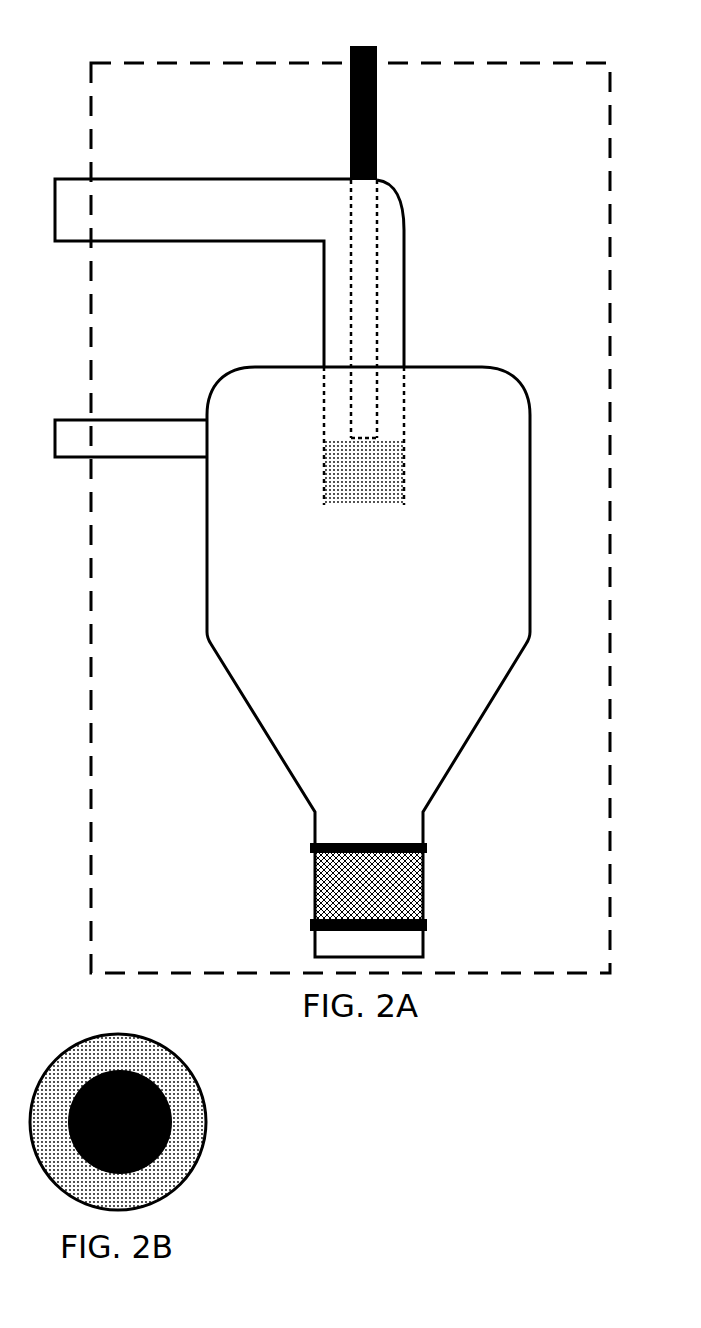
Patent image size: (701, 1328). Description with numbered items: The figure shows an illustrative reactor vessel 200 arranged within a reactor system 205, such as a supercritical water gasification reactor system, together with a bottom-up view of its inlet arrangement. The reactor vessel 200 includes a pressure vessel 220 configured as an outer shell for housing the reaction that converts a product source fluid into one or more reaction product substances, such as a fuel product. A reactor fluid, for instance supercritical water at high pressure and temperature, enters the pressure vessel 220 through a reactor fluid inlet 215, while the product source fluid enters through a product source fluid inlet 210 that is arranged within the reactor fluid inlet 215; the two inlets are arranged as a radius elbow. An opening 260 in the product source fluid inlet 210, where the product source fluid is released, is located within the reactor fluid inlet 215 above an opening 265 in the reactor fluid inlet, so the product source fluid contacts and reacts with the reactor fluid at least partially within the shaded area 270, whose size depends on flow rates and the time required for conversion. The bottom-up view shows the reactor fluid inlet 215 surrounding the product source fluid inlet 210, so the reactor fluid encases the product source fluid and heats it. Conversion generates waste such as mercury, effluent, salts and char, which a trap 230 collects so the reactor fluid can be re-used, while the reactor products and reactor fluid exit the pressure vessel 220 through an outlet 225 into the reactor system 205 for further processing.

In FIG. 2A, the reactor vessel 200 is at (524, 166).
In FIG. 2A, the reactor system 205 is at (455, 63).
In FIG. 2A, the product source fluid inlet 210 is at (378, 137).
In FIG. 2B, the product source fluid inlet 210 is at (172, 1117).
In FIG. 2A, the reactor fluid inlet 215 is at (405, 236).
In FIG. 2B, the reactor fluid inlet 215 is at (192, 1070).
In FIG. 2A, the pressure vessel 220 is at (526, 390).
In FIG. 2A, the outlet 225 is at (125, 420).
In FIG. 2A, the trap 230 is at (427, 888).
In FIG. 2A, the opening 260 is at (366, 441).
In FIG. 2A, the opening 265 is at (358, 508).
In FIG. 2A, the shaded area 270 is at (399, 455).
In FIG. 2B, the shaded area 270 is at (128, 1047).